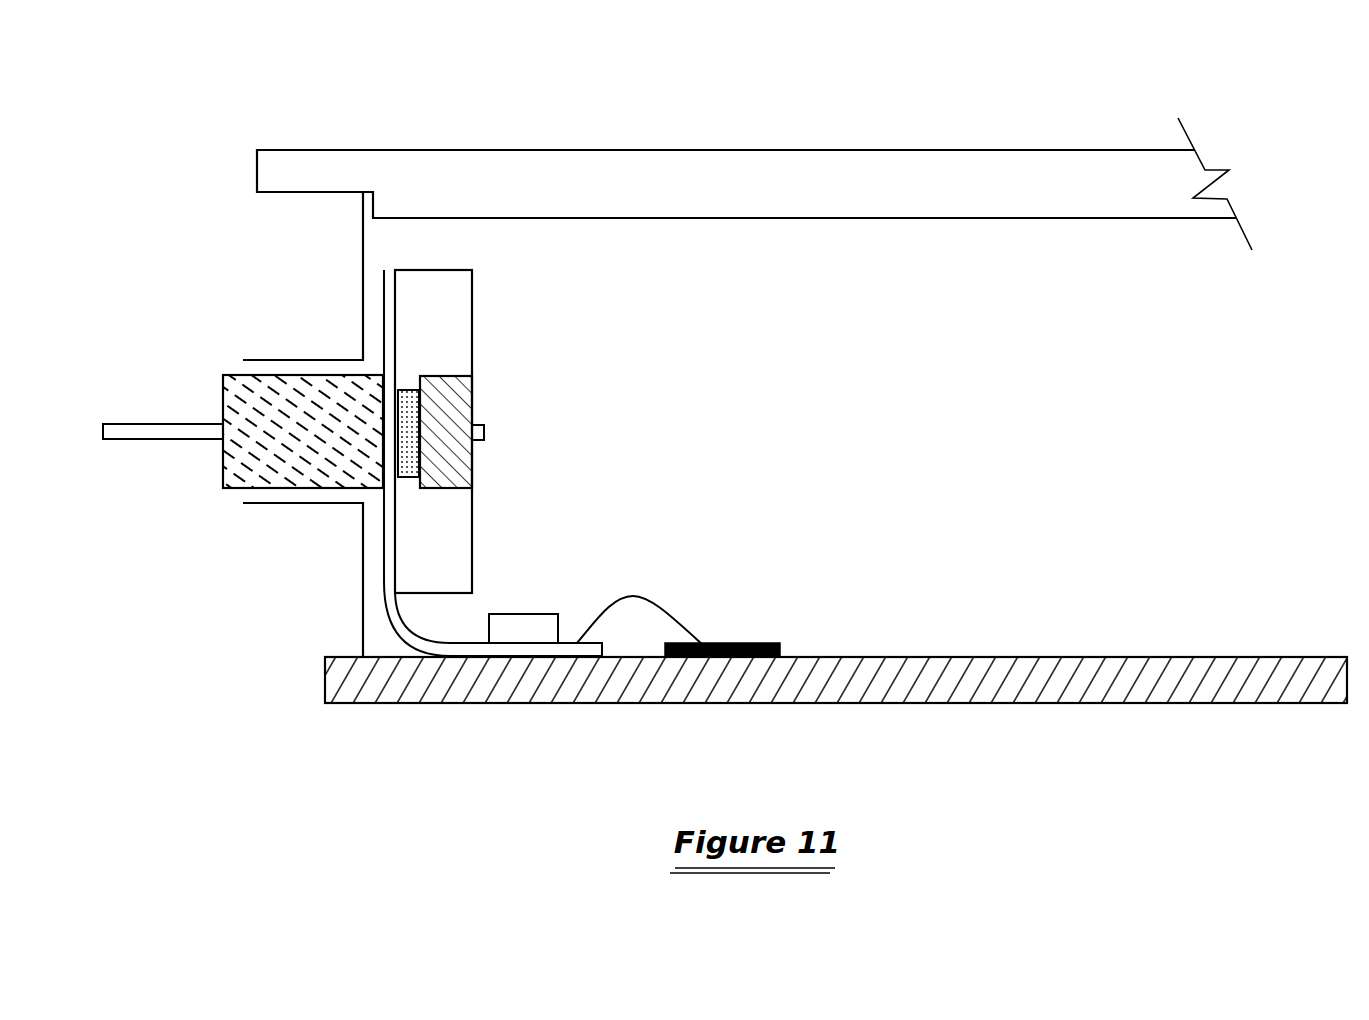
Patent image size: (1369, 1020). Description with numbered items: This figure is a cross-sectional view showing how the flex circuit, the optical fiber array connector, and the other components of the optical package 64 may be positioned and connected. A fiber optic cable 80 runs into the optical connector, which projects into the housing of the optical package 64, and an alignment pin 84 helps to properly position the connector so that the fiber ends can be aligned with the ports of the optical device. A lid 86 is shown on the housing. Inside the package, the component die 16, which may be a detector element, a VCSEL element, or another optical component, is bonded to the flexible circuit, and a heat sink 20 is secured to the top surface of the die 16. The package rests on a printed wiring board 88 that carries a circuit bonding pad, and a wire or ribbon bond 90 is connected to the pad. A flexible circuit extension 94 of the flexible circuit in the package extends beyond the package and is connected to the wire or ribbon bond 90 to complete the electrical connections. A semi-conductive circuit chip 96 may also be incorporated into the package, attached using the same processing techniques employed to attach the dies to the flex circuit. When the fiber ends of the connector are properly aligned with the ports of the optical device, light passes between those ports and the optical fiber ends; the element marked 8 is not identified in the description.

The mirror assembly 8 is at (446, 531).
The component die 16 is at (407, 410).
The heat sink 20 is at (468, 470).
The optical package 64 is at (630, 290).
The fiber optic cable 80 is at (160, 426).
The alignment pin 84 is at (484, 430).
The lid 86 is at (720, 157).
The printed wiring board 88 is at (1000, 657).
The wire or ribbon bond 90 is at (675, 613).
The flexible circuit extension 94 is at (388, 557).
The semi-conductive circuit chip 96 is at (540, 620).